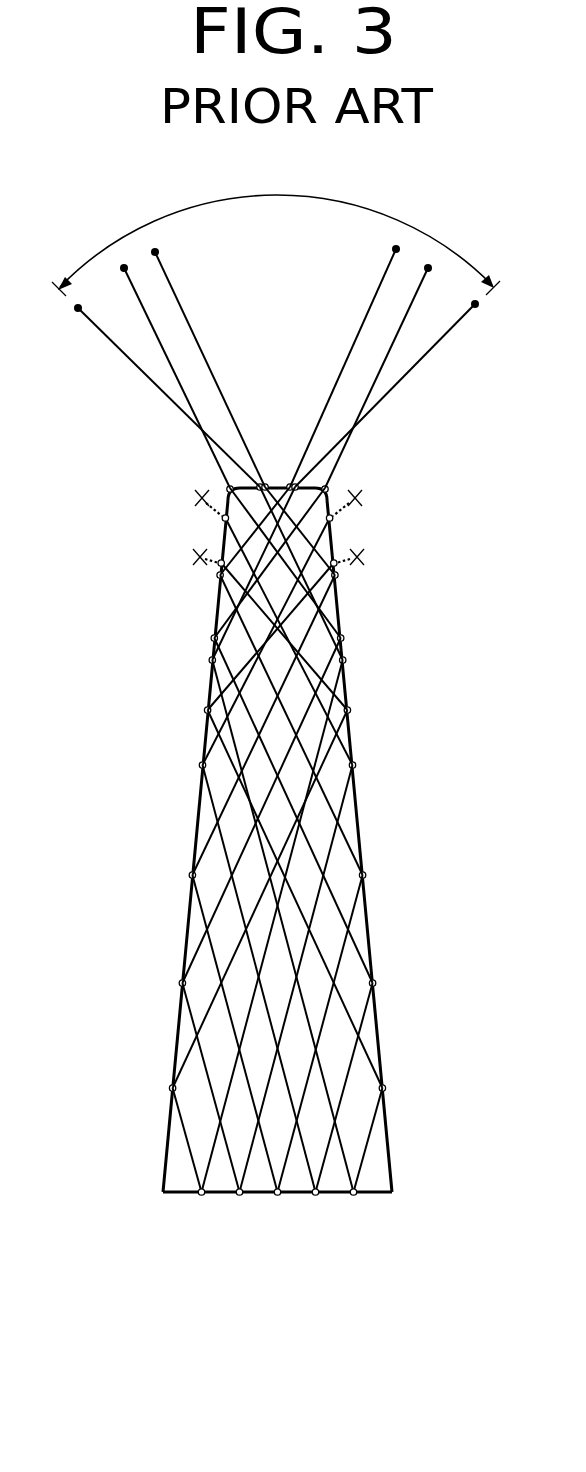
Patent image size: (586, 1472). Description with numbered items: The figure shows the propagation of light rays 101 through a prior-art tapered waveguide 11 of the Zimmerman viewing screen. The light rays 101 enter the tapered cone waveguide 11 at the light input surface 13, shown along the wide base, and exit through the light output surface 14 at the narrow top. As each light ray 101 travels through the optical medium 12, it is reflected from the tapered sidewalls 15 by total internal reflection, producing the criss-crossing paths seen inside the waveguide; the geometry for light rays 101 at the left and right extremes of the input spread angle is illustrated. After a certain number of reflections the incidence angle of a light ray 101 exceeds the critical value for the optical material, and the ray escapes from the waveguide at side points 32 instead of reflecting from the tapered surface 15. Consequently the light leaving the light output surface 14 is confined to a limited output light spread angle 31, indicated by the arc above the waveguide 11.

The tapered waveguide 11 is at (303, 834).
The optical medium 12 is at (328, 948).
The light input surface 13 is at (187, 1194).
The light output surface 14 is at (277, 486).
The tapered sidewalls 15 is at (195, 815).
The output light spread angle 31 is at (277, 195).
The side points 32 is at (194, 497).
The light rays 101 is at (213, 1102).